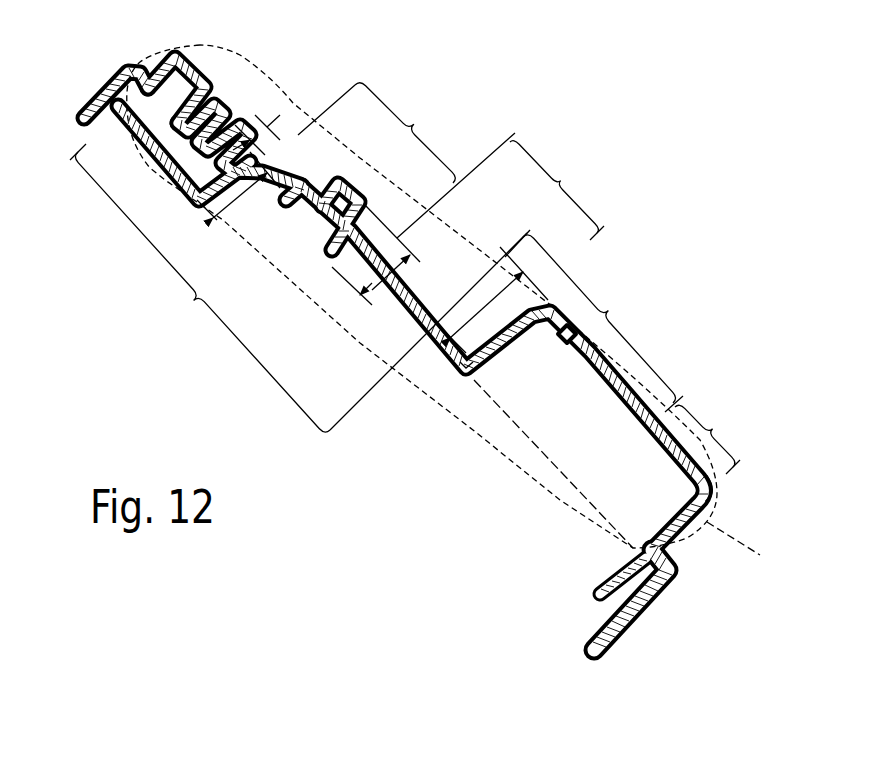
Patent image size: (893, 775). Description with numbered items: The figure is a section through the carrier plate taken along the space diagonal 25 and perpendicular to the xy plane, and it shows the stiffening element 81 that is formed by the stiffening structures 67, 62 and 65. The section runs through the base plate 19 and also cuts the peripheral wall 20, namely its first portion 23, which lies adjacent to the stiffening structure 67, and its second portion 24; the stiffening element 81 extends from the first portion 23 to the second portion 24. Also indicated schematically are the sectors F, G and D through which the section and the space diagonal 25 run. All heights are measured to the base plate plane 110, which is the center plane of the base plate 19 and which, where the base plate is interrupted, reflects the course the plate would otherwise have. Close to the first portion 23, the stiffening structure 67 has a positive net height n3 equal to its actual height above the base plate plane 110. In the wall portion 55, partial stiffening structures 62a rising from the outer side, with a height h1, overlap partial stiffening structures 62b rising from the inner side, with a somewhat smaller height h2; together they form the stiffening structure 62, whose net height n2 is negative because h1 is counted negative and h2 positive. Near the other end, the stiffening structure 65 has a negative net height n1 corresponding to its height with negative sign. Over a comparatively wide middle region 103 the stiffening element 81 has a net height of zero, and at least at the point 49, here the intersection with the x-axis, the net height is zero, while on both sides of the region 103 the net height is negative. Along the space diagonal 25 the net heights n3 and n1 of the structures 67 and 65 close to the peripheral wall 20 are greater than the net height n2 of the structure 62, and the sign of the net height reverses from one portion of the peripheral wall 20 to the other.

The base plate 19 is at (418, 302).
The peripheral wall 20 is at (650, 607).
The first portion 23 is at (103, 110).
The second portion 24 is at (610, 642).
The space diagonal 25 is at (720, 530).
The point 49 is at (432, 335).
The wall portion 55 is at (405, 133).
The stiffening structure 62 is at (353, 170).
The partial stiffening structures 62a is at (338, 178).
The partial stiffening structures 62b is at (287, 212).
The stiffening structure 65 is at (707, 487).
The stiffening structure 67 is at (160, 118).
The stiffening element 81 is at (485, 435).
The middle region 103 is at (554, 187).
The base plate plane 110 is at (555, 472).
The sector D is at (202, 292).
The sector G is at (599, 319).
The sector F is at (705, 431).
The net height n1 is at (494, 300).
The net height n2 is at (256, 130).
The net height n3 is at (238, 187).
The height h1 is at (393, 247).
The height h2 is at (359, 296).